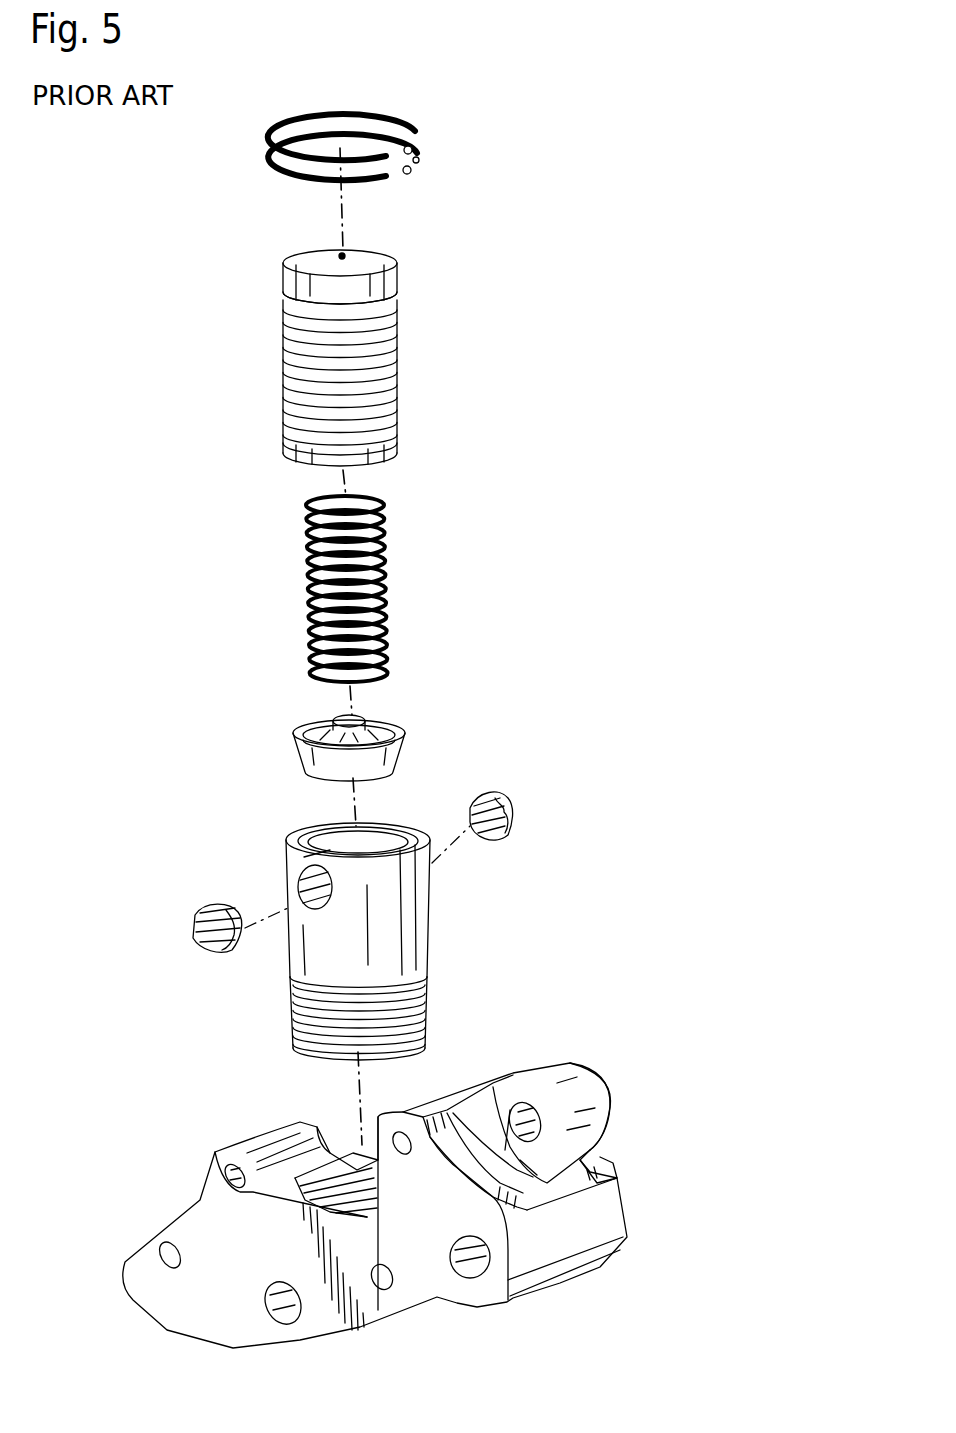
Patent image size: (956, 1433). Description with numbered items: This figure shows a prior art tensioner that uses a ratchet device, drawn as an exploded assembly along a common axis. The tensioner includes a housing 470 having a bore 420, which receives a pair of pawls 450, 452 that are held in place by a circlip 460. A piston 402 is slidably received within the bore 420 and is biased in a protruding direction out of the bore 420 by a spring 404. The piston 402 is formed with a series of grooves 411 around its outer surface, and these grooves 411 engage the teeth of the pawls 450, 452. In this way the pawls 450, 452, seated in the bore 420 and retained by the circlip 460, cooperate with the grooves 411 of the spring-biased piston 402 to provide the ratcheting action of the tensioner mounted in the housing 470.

The circlip 460 is at (420, 143).
The piston 402 is at (389, 358).
The grooves 411 is at (400, 368).
The spring 404 is at (380, 505).
The bore 420 is at (432, 908).
The pawl 450 is at (512, 800).
The pawl 452 is at (192, 928).
The housing 470 is at (600, 1082).